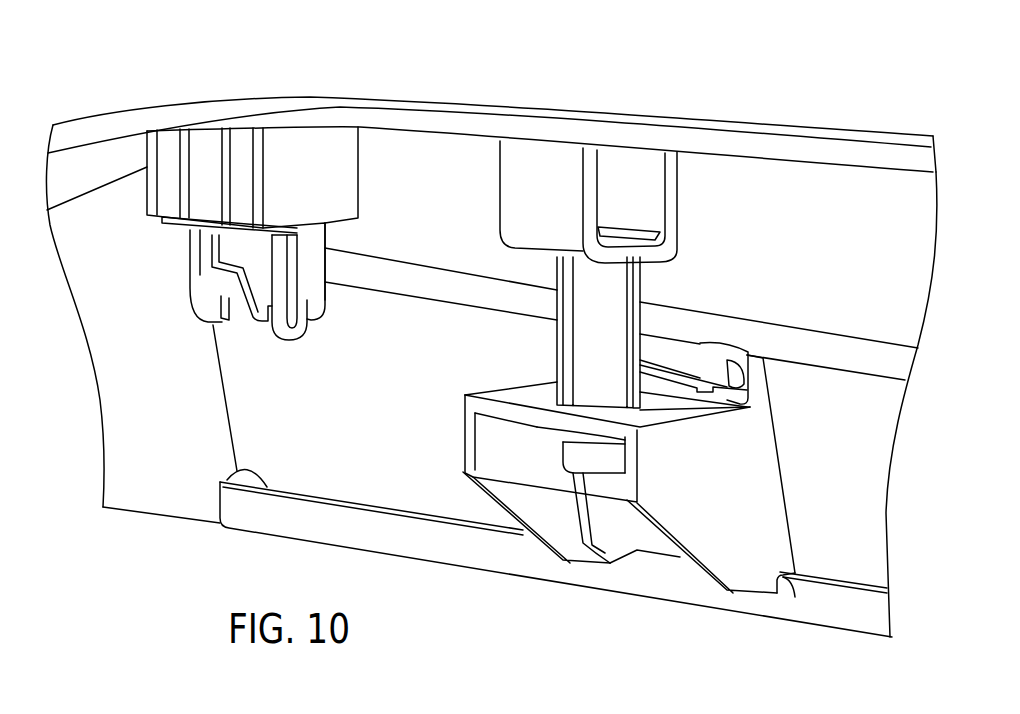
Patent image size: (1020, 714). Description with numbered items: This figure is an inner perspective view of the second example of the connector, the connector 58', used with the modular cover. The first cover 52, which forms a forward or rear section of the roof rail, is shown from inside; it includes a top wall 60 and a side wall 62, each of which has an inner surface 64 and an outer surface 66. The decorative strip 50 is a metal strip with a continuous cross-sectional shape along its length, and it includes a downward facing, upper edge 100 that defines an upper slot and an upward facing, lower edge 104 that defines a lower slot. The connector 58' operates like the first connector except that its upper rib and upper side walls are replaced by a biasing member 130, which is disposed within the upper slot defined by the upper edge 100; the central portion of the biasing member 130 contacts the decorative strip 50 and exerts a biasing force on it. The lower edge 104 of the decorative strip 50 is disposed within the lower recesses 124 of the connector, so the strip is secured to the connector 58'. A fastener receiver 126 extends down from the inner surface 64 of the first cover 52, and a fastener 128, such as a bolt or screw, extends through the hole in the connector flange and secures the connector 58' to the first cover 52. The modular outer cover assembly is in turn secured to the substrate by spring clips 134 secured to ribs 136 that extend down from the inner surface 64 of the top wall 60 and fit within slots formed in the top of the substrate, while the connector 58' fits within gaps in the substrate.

The decorative strip 50 is at (843, 540).
The first cover 52 is at (673, 118).
The connector 58' is at (654, 464).
The top wall 60 is at (803, 152).
The side wall 62 is at (148, 425).
The inner surface 64 is at (375, 132).
The outer surface 66 is at (299, 98).
The downward facing, upper edge 100 is at (810, 330).
The upward facing, lower edge 104 is at (220, 480).
The lower recesses 124 is at (793, 587).
The fastener receiver 126 is at (585, 338).
The fastener 128 is at (573, 452).
The biasing member 130 is at (768, 380).
The spring clips 134 is at (243, 320).
The ribs 136 is at (308, 300).